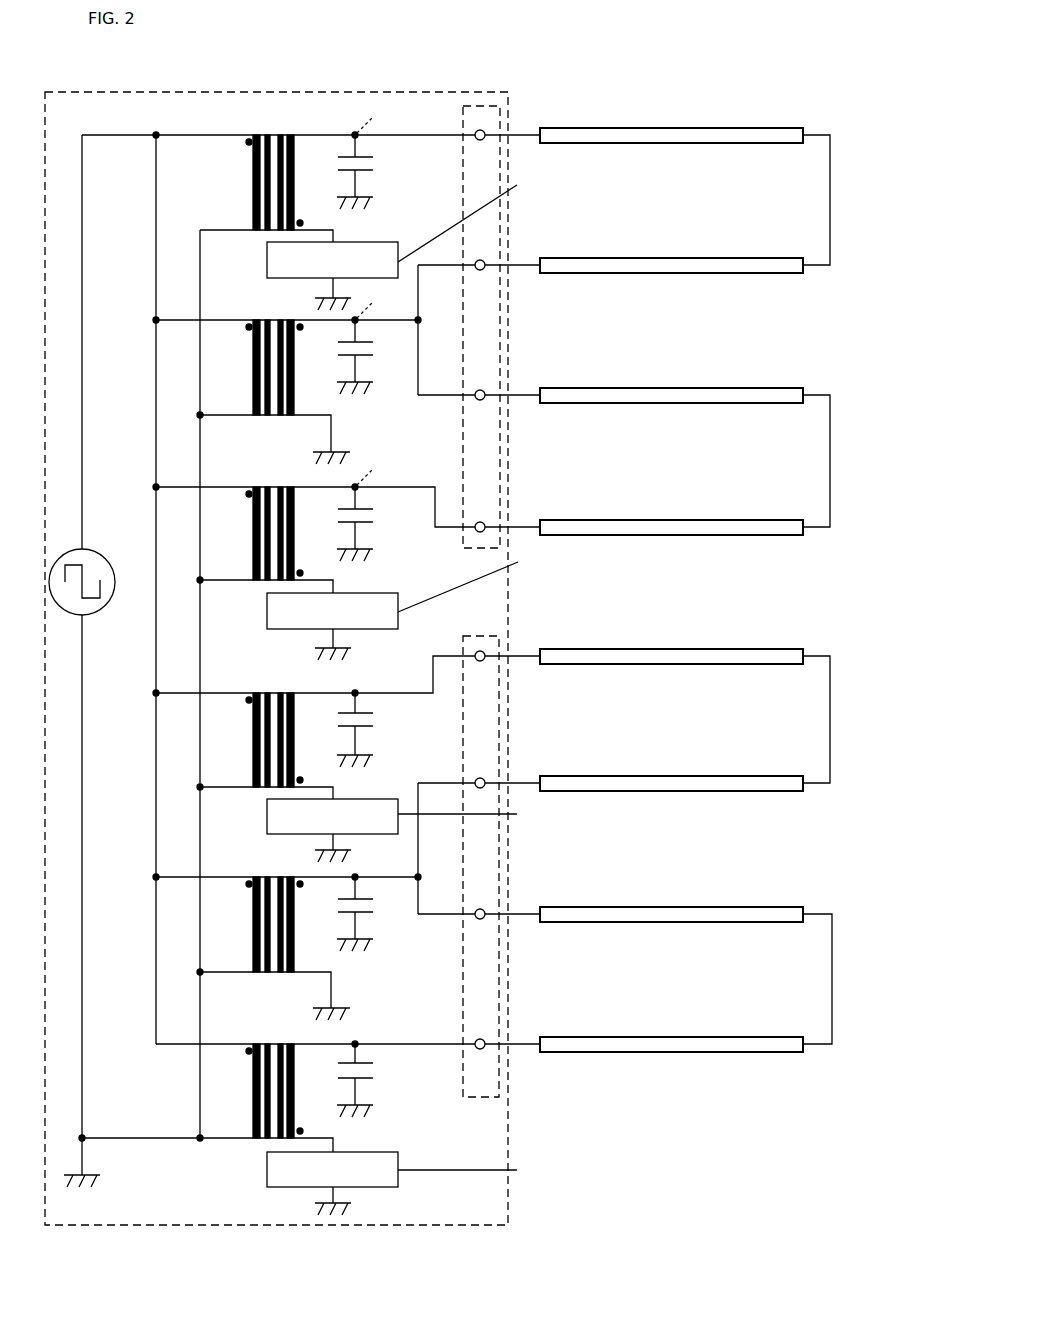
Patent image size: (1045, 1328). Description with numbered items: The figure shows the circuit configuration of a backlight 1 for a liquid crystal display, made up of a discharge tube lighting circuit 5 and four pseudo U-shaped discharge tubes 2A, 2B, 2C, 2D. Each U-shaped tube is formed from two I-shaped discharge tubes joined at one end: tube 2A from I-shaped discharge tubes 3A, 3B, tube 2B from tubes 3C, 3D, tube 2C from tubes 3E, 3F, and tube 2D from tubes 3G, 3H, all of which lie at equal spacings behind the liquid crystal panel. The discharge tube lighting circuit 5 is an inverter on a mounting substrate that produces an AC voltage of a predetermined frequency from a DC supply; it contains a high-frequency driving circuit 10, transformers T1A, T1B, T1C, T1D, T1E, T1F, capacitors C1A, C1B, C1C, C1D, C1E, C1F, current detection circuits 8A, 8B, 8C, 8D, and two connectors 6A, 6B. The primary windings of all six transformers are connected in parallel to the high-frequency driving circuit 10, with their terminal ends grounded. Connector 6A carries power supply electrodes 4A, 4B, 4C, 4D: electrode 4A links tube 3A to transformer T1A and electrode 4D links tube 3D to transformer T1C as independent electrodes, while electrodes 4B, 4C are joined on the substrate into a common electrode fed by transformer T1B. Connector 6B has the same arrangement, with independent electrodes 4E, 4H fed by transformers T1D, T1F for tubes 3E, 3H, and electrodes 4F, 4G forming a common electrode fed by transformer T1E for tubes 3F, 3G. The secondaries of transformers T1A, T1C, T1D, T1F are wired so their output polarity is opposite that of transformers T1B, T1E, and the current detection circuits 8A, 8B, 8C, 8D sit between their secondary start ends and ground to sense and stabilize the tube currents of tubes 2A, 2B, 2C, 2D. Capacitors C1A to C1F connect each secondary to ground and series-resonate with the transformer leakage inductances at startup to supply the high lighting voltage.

The backlight 1 is at (555, 94).
The U-shaped discharge tube 2A is at (722, 103).
The U-shaped discharge tube 2B is at (725, 348).
The U-shaped discharge tube 2C is at (725, 608).
The U-shaped discharge tube 2D is at (737, 869).
The I-shaped discharge tube 3A is at (655, 128).
The I-shaped discharge tube 3B is at (655, 258).
The I-shaped discharge tube 3C is at (655, 388).
The I-shaped discharge tube 3D is at (655, 520).
The I-shaped discharge tube 3E is at (655, 649).
The I-shaped discharge tube 3F is at (655, 776).
The I-shaped discharge tube 3G is at (655, 907).
The I-shaped discharge tube 3H is at (655, 1037).
The power supply electrode 4A is at (485, 131).
The power supply electrode 4B is at (485, 261).
The power supply electrode 4C is at (485, 391).
The power supply electrode 4D is at (485, 523).
The power supply electrode 4E is at (485, 652).
The power supply electrode 4F is at (485, 779).
The power supply electrode 4G is at (485, 910).
The power supply electrode 4H is at (485, 1040).
The discharge tube lighting circuit 5 is at (340, 92).
The connector 6A is at (470, 106).
The connector 6B is at (470, 636).
The current detection circuit 8A is at (267, 261).
The current detection circuit 8B is at (267, 610).
The current detection circuit 8C is at (267, 818).
The current detection circuit 8D is at (267, 1168).
The high-frequency driving circuit 10 is at (97, 558).
The transformer T1A is at (266, 174).
The transformer T1B is at (287, 378).
The transformer T1C is at (315, 526).
The transformer T1D is at (315, 727).
The transformer T1E is at (287, 935).
The transformer T1F is at (276, 1077).
The capacitor C1A is at (378, 156).
The capacitor C1B is at (378, 341).
The capacitor C1C is at (378, 508).
The capacitor C1D is at (379, 728).
The capacitor C1E is at (377, 912).
The capacitor C1F is at (377, 1079).